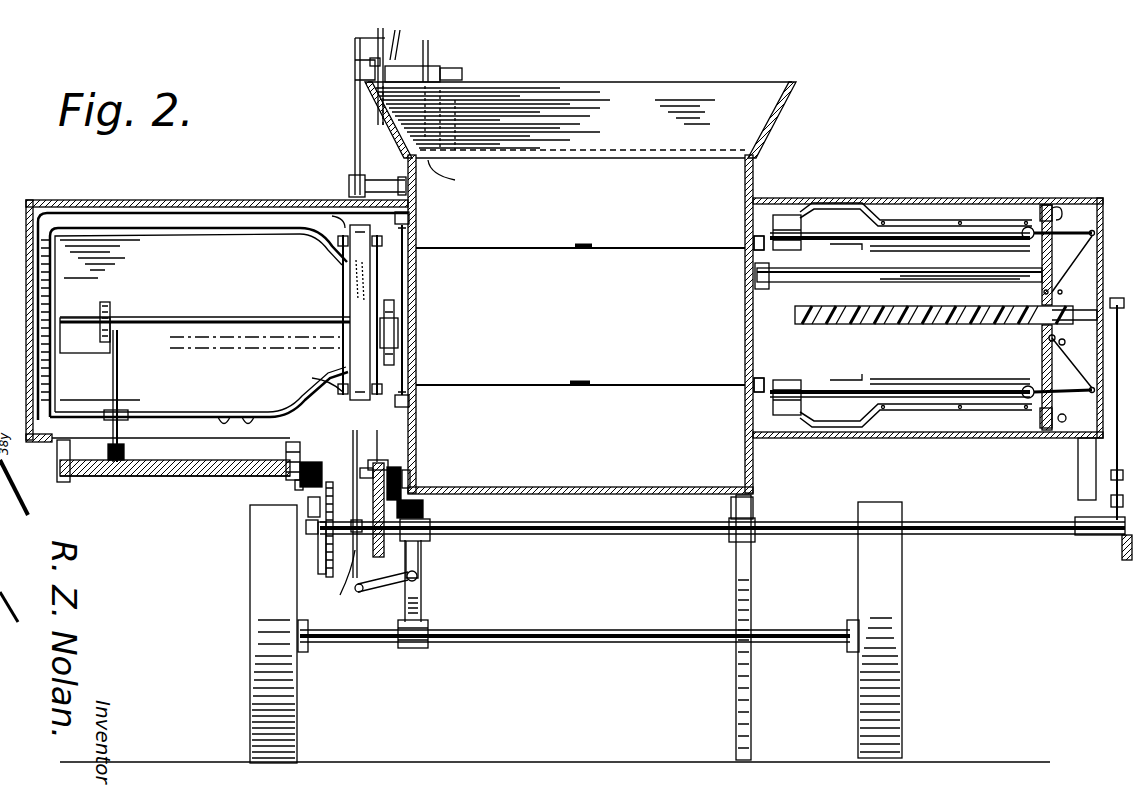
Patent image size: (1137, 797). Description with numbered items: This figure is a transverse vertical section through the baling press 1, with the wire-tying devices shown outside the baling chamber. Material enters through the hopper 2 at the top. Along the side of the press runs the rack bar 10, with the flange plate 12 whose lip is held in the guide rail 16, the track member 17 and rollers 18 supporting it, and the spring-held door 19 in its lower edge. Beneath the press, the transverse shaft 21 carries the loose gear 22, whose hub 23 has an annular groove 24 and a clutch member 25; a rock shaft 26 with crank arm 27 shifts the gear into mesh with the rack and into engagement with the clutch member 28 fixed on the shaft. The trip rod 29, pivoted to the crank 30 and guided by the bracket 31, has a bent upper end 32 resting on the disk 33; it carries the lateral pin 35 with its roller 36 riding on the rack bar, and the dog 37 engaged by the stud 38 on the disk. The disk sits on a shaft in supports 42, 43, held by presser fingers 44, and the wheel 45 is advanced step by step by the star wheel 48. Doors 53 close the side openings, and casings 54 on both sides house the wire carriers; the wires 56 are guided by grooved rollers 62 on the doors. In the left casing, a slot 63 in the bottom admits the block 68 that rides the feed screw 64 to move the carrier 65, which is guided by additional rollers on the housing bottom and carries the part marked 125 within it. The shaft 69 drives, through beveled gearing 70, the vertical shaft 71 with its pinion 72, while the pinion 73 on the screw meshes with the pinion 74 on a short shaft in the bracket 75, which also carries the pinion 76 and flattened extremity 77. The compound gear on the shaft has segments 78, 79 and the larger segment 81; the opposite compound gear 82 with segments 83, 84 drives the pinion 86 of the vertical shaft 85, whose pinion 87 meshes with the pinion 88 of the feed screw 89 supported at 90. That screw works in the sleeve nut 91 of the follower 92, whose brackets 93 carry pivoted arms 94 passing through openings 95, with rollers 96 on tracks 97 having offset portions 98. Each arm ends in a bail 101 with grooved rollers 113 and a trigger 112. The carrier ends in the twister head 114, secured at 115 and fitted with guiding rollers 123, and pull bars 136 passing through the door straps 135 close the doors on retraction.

The baling press 1 is at (628, 487).
The hopper 2 is at (645, 95).
The rack bar 10 is at (373, 488).
The flange plate 12 is at (412, 480).
The guide rail 16 is at (390, 460).
The track member 17 is at (402, 472).
The rollers 18 is at (377, 439).
The door 19 is at (424, 512).
The shaft 21 is at (620, 535).
The gear 22 is at (378, 590).
The hub 23 is at (424, 595).
The annular groove 24 is at (425, 542).
The clutch member 25 is at (340, 636).
The rock shaft 26 is at (418, 578).
The crank arm 27 is at (420, 565).
The clutch member 28 is at (335, 583).
The trip rod 29 is at (354, 152).
The crank 30 is at (356, 640).
The bracket 31 is at (349, 184).
The inwardly bent upper end 32 is at (355, 38).
The disk 33 is at (378, 30).
The lateral pin 35 is at (354, 467).
The roller or sleeve 36 is at (351, 497).
The dog 37 is at (358, 78).
The stud or pin 38 is at (370, 62).
The support 42 is at (405, 60).
The support 43 is at (462, 70).
The resilient presser fingers 44 is at (406, 32).
The wheel 45 is at (430, 48).
The star wheel 48 is at (580, 204).
The doors 53 is at (416, 300).
The lateral casings 54 is at (215, 200).
The wires 56 is at (640, 387).
The grooved rollers 62 is at (420, 240).
The slot 63 is at (180, 476).
The worm shaft or feed screw 64 is at (115, 476).
The carrier 65 is at (123, 325).
The block 68 is at (64, 482).
The shaft 69 is at (206, 316).
The beveled gearing 70 is at (112, 322).
The vertical shaft 71 is at (120, 385).
The beveled pinion 72 is at (128, 448).
The beveled pinion 73 is at (286, 475).
The beveled pinion 74 is at (308, 505).
The right angular bracket 75 is at (300, 480).
The beveled pinion 76 is at (297, 488).
The flattened extremity 77 is at (308, 530).
The segment 78 is at (273, 634).
The segment 79 is at (318, 550).
The larger segment 81 is at (330, 578).
The compound gear 82 is at (1100, 540).
The segment 83 is at (1105, 500).
The segment 84 is at (1125, 560).
The vertical shaft 85 is at (1112, 464).
The beveled pinion 86 is at (1110, 496).
The beveled pinion 87 is at (1070, 347).
The beveled pinion 88 is at (1116, 298).
The worm shaft or feed screw 89 is at (945, 325).
The support 90 is at (760, 342).
The sleeve nut 91 is at (1054, 300).
The follower 92 is at (1048, 338).
The brackets 93 is at (1093, 240).
The arms 94 is at (1070, 230).
The openings 95 is at (1044, 204).
The rollers 96 is at (1024, 240).
The tracks 97 is at (885, 205).
The offset portions 98 is at (822, 210).
The bail 101 is at (785, 215).
The trigger 112 is at (850, 247).
The grooved rollers 113 is at (752, 240).
The head 114 is at (350, 283).
The securing point 115 is at (340, 262).
The grooved guiding rollers 123 is at (345, 214).
The guide 125 is at (340, 337).
The guide or strap 135 is at (398, 322).
The pull bars 136 is at (398, 340).